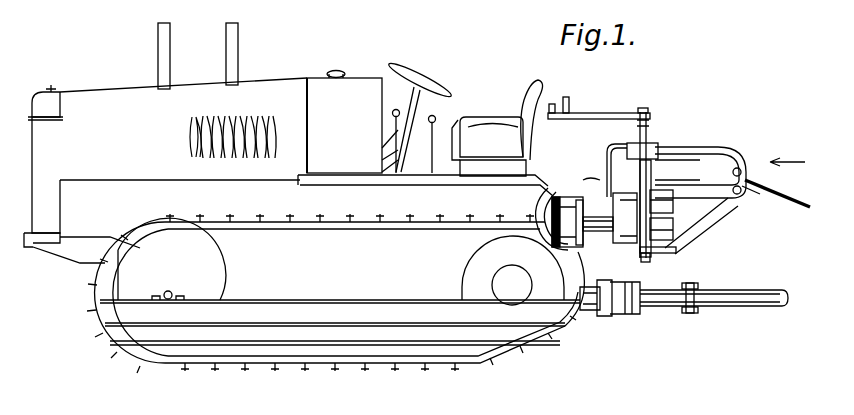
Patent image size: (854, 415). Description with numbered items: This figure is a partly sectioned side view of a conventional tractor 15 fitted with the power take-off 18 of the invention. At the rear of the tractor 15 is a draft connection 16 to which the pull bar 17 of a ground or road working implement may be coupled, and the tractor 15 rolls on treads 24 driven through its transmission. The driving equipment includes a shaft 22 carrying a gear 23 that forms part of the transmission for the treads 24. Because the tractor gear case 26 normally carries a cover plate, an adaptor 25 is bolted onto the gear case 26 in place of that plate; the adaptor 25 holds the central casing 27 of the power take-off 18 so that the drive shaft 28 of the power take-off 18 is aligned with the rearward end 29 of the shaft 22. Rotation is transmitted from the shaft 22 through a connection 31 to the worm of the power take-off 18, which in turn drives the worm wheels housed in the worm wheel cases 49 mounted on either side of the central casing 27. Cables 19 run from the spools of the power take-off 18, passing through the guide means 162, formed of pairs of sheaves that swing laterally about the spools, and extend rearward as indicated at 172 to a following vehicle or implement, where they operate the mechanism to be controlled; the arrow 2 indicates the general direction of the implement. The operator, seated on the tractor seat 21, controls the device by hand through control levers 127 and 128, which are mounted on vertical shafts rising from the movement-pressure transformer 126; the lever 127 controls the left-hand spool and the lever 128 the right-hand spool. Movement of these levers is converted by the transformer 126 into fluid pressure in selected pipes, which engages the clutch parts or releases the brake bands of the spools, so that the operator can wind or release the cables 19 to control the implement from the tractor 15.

The tractor 15 is at (268, 90).
The tractor seat 21 is at (488, 135).
The treads 24 is at (455, 365).
The rearward end of the shaft 29 is at (565, 262).
The gear 23 is at (548, 250).
The shaft 22 is at (548, 200).
The gear case 26 is at (566, 197).
The adaptor 25 is at (602, 193).
The connection 31 is at (604, 210).
The control lever 128 is at (578, 112).
The control lever 127 is at (623, 118).
The movement-pressure transformer 126 is at (655, 144).
The power take-off 18 is at (676, 166).
The guide means 162 is at (754, 177).
The direction arrow 2 is at (789, 151).
The cables 19 is at (787, 195).
The cable extension 172 is at (762, 192).
The worm wheel case 49 is at (673, 223).
The central casing 27 is at (626, 240).
The drive shaft 28 is at (608, 310).
The draft connection 16 is at (615, 313).
The pull bar 17 is at (725, 290).